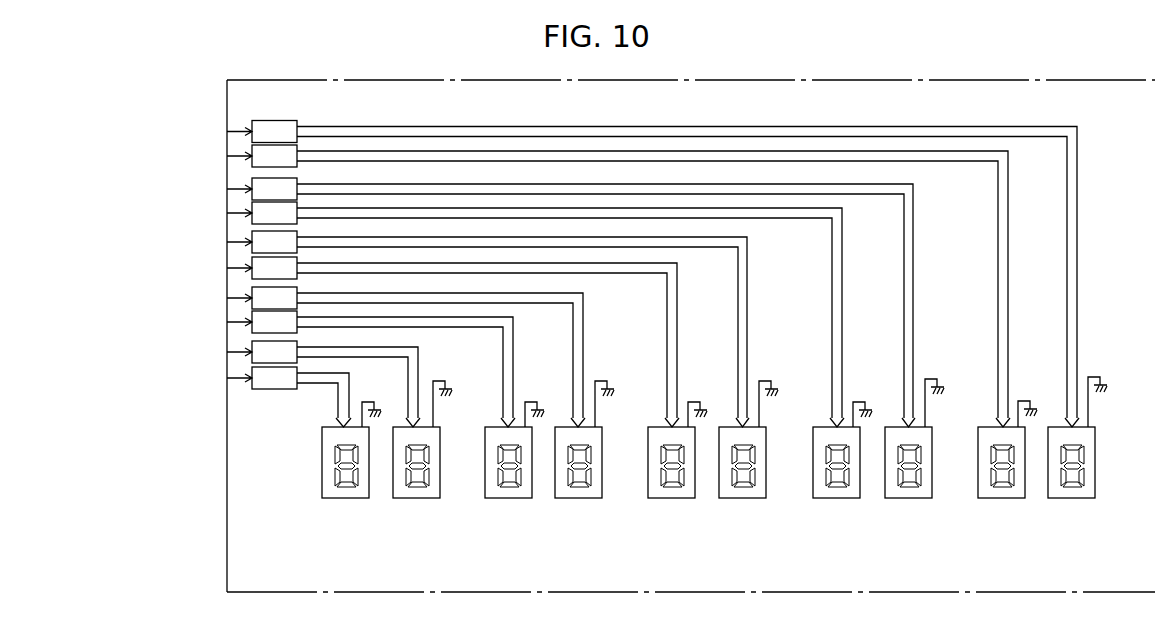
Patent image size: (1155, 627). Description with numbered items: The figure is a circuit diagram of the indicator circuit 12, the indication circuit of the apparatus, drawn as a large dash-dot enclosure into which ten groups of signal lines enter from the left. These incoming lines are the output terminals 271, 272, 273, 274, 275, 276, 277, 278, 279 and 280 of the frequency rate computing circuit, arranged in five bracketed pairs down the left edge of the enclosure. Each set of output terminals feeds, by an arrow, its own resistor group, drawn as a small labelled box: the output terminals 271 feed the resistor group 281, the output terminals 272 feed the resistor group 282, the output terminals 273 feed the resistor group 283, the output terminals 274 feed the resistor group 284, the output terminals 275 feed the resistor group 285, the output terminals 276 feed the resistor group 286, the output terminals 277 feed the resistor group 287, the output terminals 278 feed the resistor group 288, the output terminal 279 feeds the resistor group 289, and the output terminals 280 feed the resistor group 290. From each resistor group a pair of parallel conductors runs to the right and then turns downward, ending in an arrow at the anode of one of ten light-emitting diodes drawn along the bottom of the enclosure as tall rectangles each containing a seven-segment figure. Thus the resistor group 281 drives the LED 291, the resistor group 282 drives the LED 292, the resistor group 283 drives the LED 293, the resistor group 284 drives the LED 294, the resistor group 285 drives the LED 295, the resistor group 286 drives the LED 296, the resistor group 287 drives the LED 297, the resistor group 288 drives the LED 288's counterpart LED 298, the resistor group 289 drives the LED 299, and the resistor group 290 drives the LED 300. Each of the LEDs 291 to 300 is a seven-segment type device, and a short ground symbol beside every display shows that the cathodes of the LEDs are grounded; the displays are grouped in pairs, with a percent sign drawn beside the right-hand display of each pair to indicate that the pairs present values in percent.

The indicator circuit 12 is at (807, 80).
The output terminals 271 is at (215, 388).
The output terminals 272 is at (197, 377).
The output terminals 273 is at (215, 331).
The output terminals 274 is at (197, 320).
The output terminals 275 is at (215, 272).
The output terminals 276 is at (197, 261).
The output terminals 277 is at (215, 217).
The output terminals 278 is at (197, 206).
The output terminal 279 is at (215, 165).
The output terminals 280 is at (197, 157).
The resistor group 281 is at (336, 384).
The resistor group 282 is at (301, 397).
The resistor group 283 is at (418, 357).
The resistor group 284 is at (383, 369).
The resistor group 285 is at (500, 329).
The resistor group 286 is at (465, 342).
The resistor group 287 is at (583, 302).
The resistor group 288 is at (548, 314).
The resistor group 289 is at (665, 273).
The resistor group 290 is at (631, 286).
The light-emitting diode 291 is at (407, 498).
The light-emitting diode 292 is at (360, 498).
The light-emitting diode 293 is at (567, 498).
The light-emitting diode 294 is at (520, 498).
The light-emitting diode 295 is at (729, 498).
The light-emitting diode 296 is at (689, 498).
The light-emitting diode 297 is at (902, 498).
The light-emitting diode 298 is at (855, 498).
The light-emitting diode 299 is at (1075, 498).
The light-emitting diode 300 is at (992, 498).